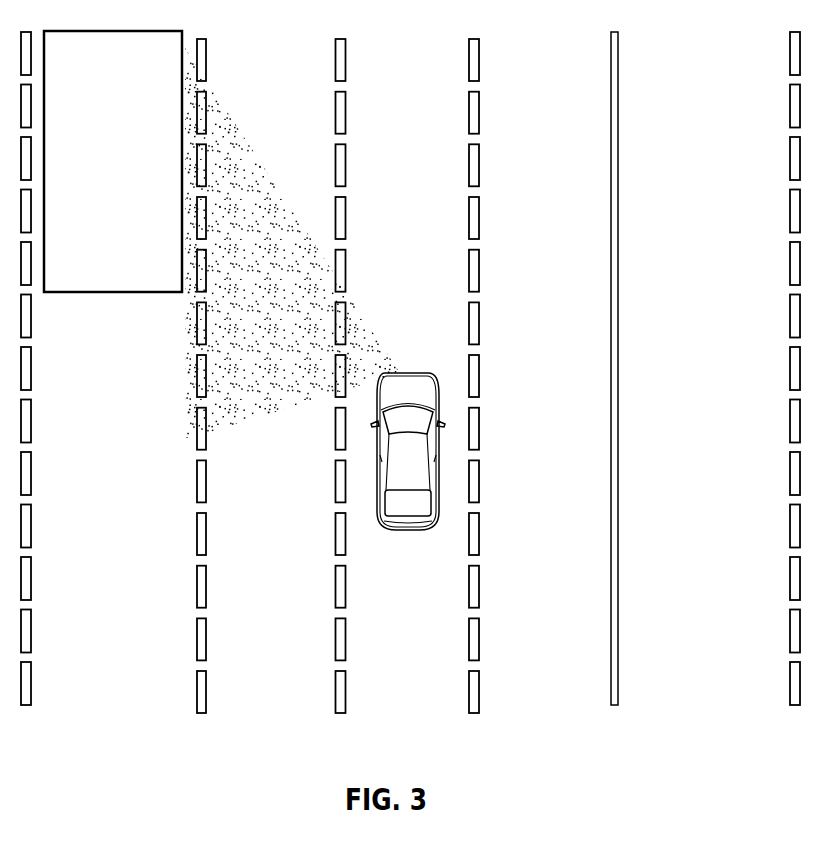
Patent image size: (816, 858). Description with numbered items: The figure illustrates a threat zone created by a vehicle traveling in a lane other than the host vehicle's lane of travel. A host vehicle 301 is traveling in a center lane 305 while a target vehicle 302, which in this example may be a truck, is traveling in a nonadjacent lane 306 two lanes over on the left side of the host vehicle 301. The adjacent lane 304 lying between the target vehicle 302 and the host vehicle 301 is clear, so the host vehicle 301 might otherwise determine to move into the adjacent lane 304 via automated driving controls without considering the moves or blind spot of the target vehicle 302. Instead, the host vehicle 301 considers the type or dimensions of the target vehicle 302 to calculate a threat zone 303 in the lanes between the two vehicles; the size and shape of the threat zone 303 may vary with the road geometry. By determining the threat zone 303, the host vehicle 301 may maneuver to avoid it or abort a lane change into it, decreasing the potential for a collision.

The host vehicle 301 is at (408, 531).
The target vehicle 302 is at (137, 175).
The threat zone 303 is at (288, 317).
The adjacent lane 304 is at (288, 531).
The center lane 305 is at (440, 267).
The nonadjacent lane 306 is at (136, 535).